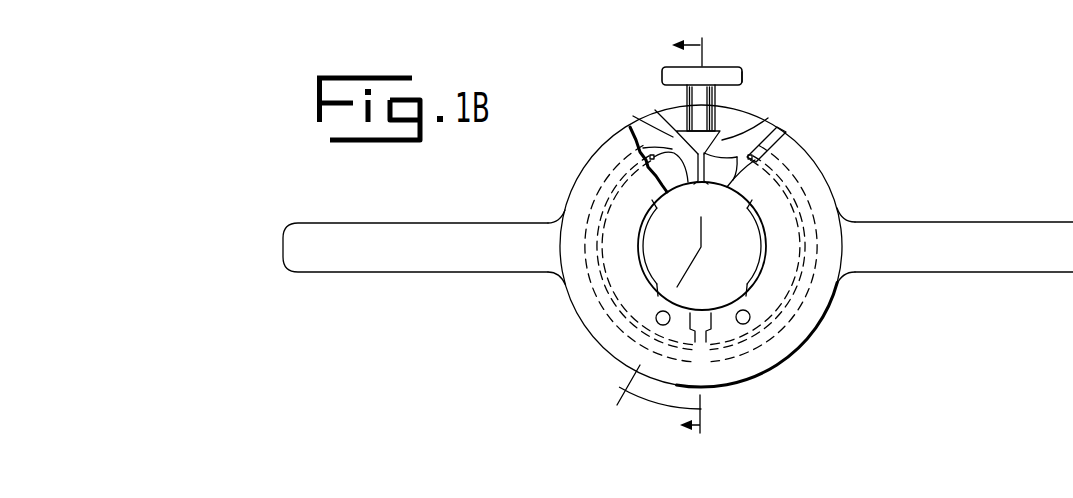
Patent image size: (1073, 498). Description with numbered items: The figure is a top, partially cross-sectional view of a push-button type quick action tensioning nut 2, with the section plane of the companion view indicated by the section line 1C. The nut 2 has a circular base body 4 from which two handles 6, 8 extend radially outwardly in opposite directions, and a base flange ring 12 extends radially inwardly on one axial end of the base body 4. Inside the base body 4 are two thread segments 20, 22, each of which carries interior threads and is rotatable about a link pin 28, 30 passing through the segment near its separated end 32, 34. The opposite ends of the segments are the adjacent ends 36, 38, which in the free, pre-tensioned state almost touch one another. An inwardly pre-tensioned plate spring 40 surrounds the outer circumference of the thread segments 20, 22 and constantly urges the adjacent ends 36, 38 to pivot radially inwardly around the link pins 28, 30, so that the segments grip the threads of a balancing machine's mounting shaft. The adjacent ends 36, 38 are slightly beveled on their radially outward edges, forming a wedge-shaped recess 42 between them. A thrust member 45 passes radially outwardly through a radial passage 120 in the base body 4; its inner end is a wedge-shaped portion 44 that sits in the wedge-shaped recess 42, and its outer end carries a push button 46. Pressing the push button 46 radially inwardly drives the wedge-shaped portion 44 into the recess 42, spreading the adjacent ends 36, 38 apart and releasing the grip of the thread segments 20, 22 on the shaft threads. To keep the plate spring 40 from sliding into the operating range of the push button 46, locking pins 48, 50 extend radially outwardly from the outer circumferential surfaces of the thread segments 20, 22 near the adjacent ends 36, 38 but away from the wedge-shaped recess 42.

The quick action tensioning nut 2 is at (548, 123).
The circular base body 4 is at (571, 302).
The handle 6 is at (413, 233).
The handle 8 is at (1022, 232).
The base flange ring 12 is at (785, 143).
The thread segment 20 is at (631, 192).
The thread segment 22 is at (786, 213).
The link pin 28 is at (657, 320).
The link pin 30 is at (748, 322).
The separated end 32 is at (695, 342).
The separated end 34 is at (706, 342).
The adjacent end 36 is at (653, 155).
The adjacent end 38 is at (733, 157).
The plate spring 40 is at (785, 297).
The wedge-shaped recess 42 is at (714, 153).
The wedge-shaped portion 44 is at (706, 152).
The thrust member 45 is at (741, 90).
The push button 46 is at (677, 68).
The locking pin 48 is at (778, 138).
The locking pin 50 is at (630, 126).
The radial passage 120 is at (688, 104).
The section line 1C is at (677, 237).